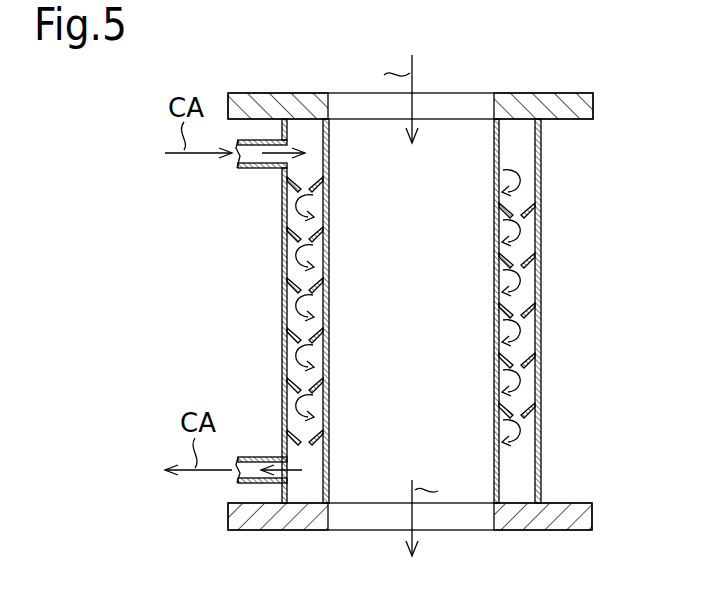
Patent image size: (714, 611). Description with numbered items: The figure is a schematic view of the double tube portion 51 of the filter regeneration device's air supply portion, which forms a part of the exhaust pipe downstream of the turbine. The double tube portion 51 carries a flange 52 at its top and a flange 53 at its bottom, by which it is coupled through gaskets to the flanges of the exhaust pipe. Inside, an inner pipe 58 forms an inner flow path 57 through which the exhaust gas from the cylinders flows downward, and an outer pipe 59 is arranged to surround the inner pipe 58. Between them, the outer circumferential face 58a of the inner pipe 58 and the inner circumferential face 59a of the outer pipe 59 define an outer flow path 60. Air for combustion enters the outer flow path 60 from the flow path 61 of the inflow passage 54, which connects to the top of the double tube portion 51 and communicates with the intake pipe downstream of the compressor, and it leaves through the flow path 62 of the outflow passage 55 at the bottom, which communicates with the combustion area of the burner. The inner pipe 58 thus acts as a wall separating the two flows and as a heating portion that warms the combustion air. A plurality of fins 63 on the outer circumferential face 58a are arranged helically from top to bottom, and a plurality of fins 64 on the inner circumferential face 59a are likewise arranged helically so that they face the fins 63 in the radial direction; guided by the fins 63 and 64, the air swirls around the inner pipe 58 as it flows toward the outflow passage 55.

The double tube portion 51 is at (542, 150).
The flange 52 is at (594, 108).
The flange 53 is at (593, 518).
The inflow passage 54 is at (263, 140).
The outflow passage 55 is at (265, 484).
The inner flow path 57 is at (472, 126).
The inner pipe 58 is at (330, 240).
The outer circumferential face 58a is at (318, 310).
The outer pipe 59 is at (542, 222).
The inner circumferential face 59a is at (530, 268).
The outer flow path 60 is at (330, 132).
The flow path 61 is at (250, 160).
The flow path 62 is at (250, 468).
The fins 63 is at (330, 392).
The fins 64 is at (542, 316).